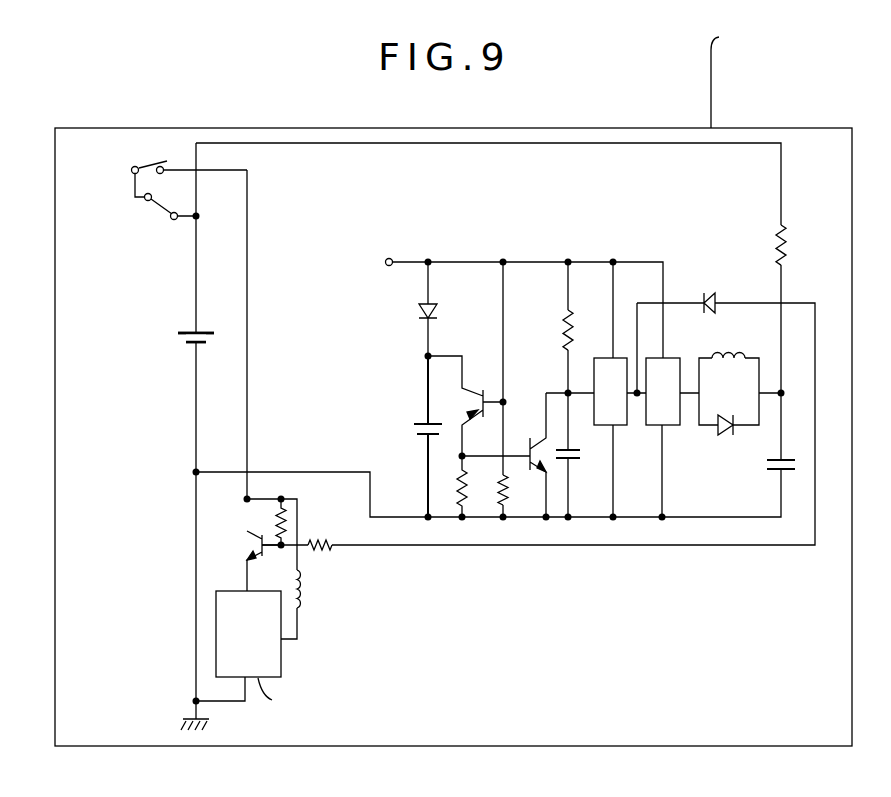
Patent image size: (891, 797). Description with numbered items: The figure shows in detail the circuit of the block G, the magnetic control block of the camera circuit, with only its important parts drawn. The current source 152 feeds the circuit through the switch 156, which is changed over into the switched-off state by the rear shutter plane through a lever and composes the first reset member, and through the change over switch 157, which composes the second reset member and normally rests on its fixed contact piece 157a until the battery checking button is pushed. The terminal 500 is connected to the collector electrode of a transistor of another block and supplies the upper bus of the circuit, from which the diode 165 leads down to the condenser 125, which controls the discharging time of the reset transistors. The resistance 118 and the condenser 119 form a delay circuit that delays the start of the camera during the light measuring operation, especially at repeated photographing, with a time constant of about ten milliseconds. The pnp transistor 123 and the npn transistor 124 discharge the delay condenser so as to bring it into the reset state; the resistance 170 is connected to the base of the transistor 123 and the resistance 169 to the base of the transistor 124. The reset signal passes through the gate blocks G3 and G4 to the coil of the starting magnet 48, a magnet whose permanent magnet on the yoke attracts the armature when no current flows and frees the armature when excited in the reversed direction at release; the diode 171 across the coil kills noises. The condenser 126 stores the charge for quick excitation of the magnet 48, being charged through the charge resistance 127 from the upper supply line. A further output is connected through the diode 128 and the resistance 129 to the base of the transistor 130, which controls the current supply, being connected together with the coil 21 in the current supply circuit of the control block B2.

The switch 156 is at (147, 166).
The change over switch 157 is at (161, 216).
The fixed contact piece 157a is at (143, 199).
The current source 152 is at (180, 333).
The terminal 500 is at (389, 267).
The diode 165 is at (437, 311).
The condenser 125 is at (421, 424).
The pnp transistor 123 is at (476, 390).
The resistance 118 is at (563, 331).
The npn transistor 124 is at (527, 452).
The resistance 169 is at (458, 482).
The resistance 170 is at (507, 483).
The condenser 119 is at (573, 458).
The gate G3 is at (610, 391).
The gate G4 is at (663, 391).
The diode 128 is at (704, 293).
The charge resistance 127 is at (787, 246).
The magnet 48 is at (733, 354).
The diode 171 is at (718, 430).
The condenser 126 is at (775, 470).
The transistor 130 is at (247, 547).
The resistance 129 is at (318, 540).
The coil 21 is at (305, 596).
The control block B2 is at (281, 672).
The block G is at (663, 128).